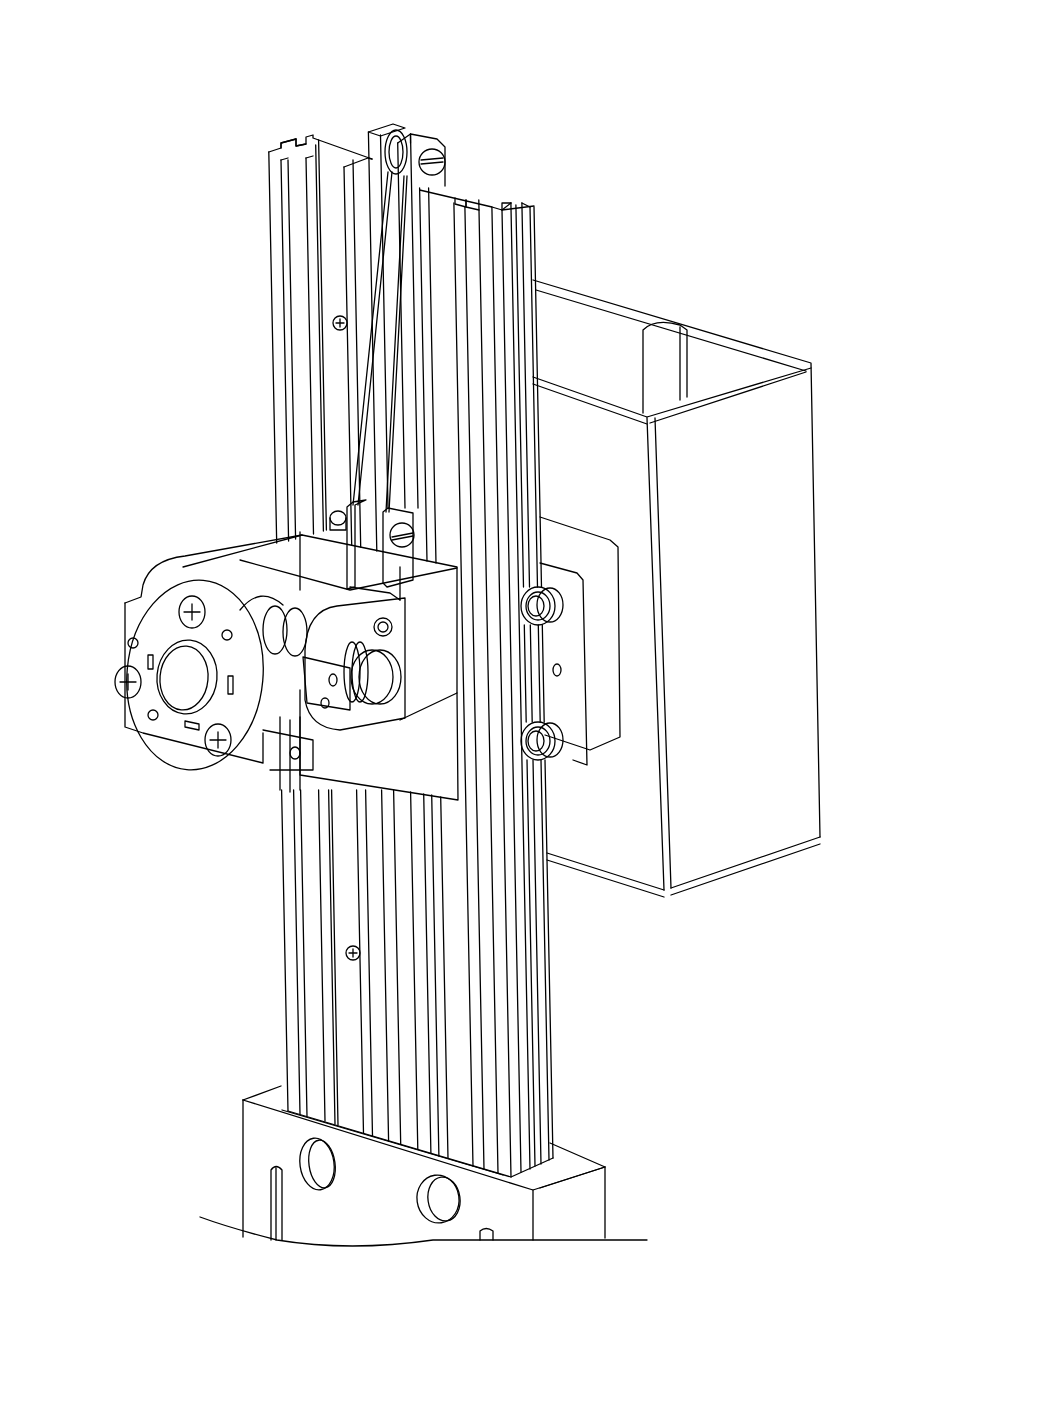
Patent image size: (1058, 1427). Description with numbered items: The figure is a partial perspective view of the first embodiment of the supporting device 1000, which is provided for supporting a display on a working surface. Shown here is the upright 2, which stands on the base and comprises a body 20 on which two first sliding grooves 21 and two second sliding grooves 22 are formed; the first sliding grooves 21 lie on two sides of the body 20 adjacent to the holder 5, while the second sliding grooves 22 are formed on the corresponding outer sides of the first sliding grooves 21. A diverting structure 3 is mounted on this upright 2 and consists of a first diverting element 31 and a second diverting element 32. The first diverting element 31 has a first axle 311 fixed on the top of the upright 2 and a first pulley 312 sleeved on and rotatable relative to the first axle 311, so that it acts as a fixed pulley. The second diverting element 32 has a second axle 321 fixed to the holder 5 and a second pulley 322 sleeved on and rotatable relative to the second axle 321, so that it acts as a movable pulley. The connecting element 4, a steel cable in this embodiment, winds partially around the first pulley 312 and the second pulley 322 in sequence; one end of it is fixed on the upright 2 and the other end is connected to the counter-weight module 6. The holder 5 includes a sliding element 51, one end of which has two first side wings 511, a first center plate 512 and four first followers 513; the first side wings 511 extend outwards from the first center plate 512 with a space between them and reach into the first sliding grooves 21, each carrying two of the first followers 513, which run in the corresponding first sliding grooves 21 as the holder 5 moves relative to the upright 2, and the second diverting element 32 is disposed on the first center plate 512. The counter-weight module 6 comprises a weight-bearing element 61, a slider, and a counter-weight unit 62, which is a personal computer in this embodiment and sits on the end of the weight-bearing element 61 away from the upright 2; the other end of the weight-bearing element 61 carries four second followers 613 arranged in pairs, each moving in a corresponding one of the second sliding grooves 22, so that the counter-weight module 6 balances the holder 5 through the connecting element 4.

The supporting device 1000 is at (205, 30).
The upright 2 is at (540, 1088).
The body 20 is at (275, 195).
The first sliding grooves 21 is at (313, 150).
The second sliding grooves 22 is at (295, 143).
The diverting structure 3 is at (538, 70).
The first diverting element 31 is at (508, 96).
The first axle 311 is at (433, 153).
The first pulley 312 is at (410, 130).
The second diverting element 32 is at (466, 640).
The second axle 321 is at (407, 548).
The second pulley 322 is at (370, 540).
The connecting element 4 is at (388, 192).
The holder 5 is at (120, 568).
The sliding element 51 is at (217, 557).
The first side wings 511 is at (322, 557).
The first center plate 512 is at (283, 530).
The first followers 513 is at (333, 510).
The counter-weight module 6 is at (767, 285).
The weight-bearing element 61 is at (603, 717).
The counter-weight unit 62 is at (803, 642).
The second followers 613 is at (548, 610).